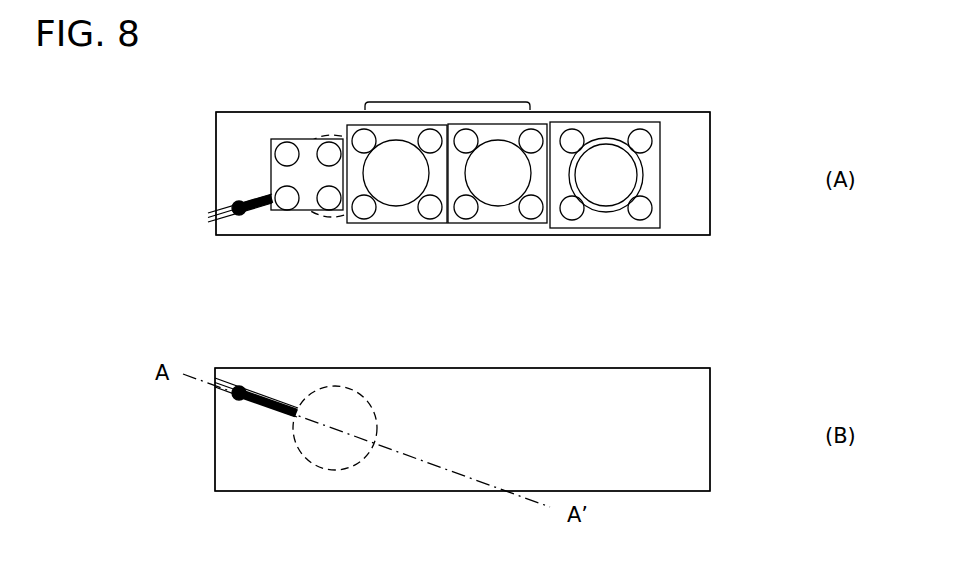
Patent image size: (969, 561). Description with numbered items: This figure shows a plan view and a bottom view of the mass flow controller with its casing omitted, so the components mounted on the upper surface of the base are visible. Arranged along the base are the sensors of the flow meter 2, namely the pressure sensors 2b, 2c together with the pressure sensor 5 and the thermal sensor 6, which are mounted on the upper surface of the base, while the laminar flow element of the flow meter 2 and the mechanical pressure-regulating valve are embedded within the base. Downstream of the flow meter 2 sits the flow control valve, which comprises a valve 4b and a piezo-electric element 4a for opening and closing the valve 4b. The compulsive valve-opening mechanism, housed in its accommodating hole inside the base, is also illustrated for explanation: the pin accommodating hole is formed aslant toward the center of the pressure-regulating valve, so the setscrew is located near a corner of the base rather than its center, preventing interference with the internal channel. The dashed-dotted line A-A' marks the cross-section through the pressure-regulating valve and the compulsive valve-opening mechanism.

The flow meter 2 is at (447, 102).
The pressure sensor 2b is at (397, 208).
The pressure sensor 2c is at (498, 208).
The piezo-electric element 4a is at (606, 157).
The valve 4b is at (607, 222).
The pressure sensor 5 is at (308, 138).
The thermal sensor 6 is at (308, 176).